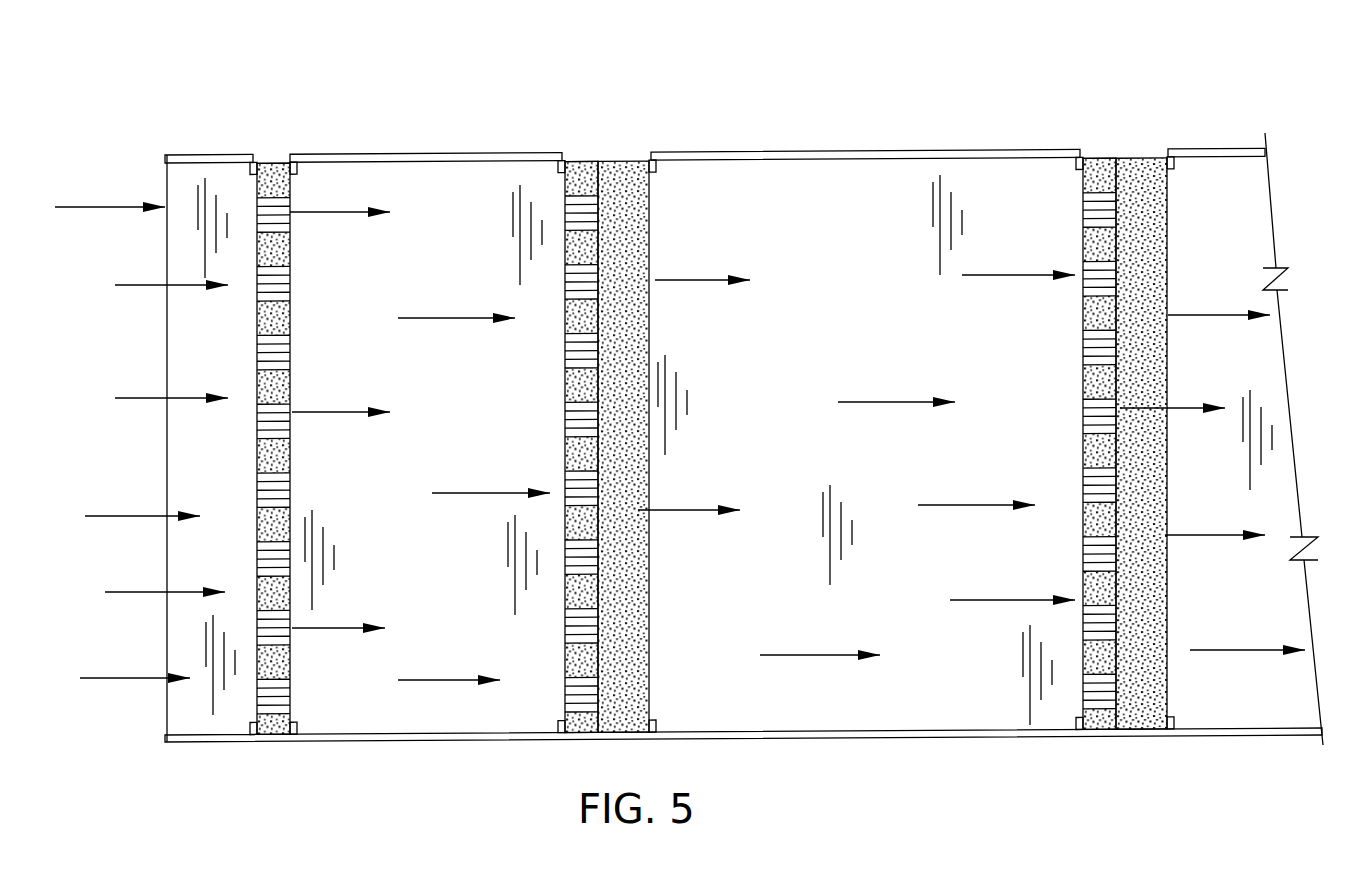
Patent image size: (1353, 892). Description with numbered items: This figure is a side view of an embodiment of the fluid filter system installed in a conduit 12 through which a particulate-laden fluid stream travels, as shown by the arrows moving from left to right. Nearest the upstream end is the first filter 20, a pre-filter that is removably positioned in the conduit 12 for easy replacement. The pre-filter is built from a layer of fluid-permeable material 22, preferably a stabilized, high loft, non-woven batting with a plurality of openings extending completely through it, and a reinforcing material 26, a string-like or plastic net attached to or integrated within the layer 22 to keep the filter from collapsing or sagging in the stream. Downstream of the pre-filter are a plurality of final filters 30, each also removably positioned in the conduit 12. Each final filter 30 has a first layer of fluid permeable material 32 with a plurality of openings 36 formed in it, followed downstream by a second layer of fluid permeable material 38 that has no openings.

The conduit 12 is at (452, 153).
The first filter 20 is at (320, 327).
The layer of fluid-permeable material 22 is at (272, 448).
The reinforcing material 26 is at (290, 452).
The final filter 30 is at (612, 146).
The first layer of fluid permeable material 32 is at (565, 380).
The openings 36 is at (568, 417).
The second layer of fluid permeable material 38 is at (630, 241).